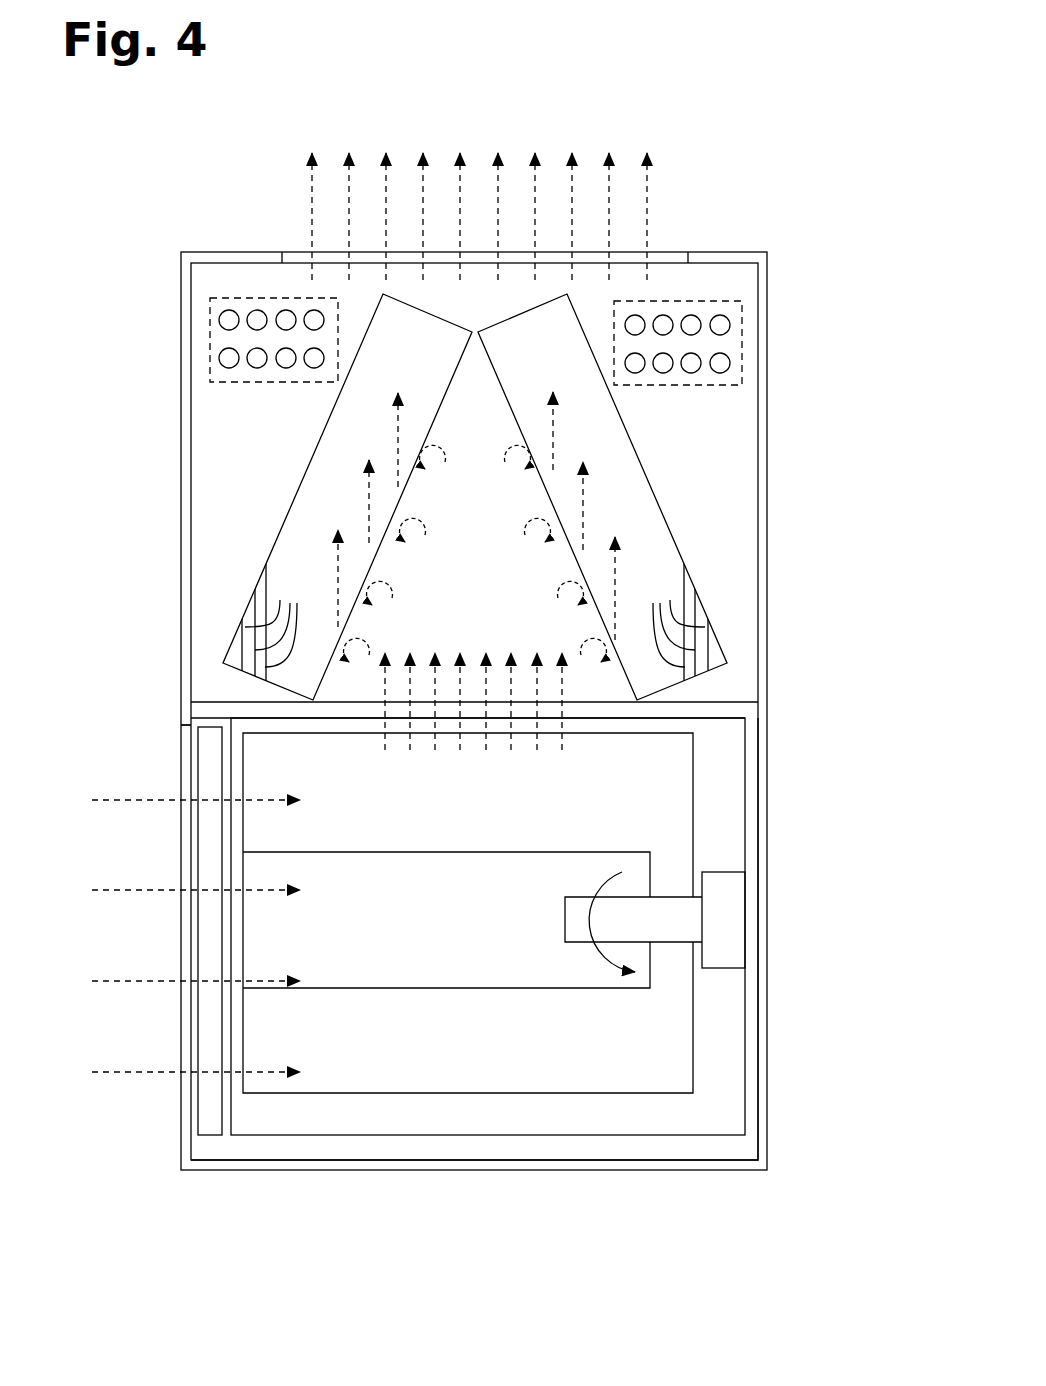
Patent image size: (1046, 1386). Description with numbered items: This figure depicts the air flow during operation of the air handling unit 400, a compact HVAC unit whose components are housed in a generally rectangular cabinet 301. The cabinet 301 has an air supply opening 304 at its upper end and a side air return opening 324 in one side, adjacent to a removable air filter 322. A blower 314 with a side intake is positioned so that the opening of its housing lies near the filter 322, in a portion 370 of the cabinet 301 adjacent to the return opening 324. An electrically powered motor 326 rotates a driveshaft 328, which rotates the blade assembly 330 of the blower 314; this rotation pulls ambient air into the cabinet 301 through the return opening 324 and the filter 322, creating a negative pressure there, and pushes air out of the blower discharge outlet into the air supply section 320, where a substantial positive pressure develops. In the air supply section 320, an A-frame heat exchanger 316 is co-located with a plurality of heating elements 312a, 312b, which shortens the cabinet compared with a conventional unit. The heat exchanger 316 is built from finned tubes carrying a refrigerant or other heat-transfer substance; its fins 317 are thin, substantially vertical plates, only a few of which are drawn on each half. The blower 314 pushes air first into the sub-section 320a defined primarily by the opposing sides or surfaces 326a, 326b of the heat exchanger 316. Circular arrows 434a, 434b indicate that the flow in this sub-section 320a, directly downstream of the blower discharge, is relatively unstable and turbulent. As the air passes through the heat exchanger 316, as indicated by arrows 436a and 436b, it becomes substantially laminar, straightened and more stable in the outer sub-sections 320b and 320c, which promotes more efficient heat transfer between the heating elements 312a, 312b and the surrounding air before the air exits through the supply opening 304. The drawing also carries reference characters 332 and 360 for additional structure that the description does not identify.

The air handling unit 400 is at (155, 198).
The cabinet 301 is at (767, 484).
The air supply opening 304 is at (683, 252).
The heating element 312a is at (210, 347).
The heating element 312b is at (742, 336).
The blower 314 is at (468, 913).
The heat exchanger 316 is at (313, 500).
The fins 317 is at (475, 622).
The air supply section 320 is at (233, 555).
The sub-section 320a is at (473, 635).
The sub-section 320b is at (289, 543).
The sub-section 320c is at (665, 551).
The removable air filter 322 is at (207, 1118).
The side air return opening 324 is at (182, 745).
The electrically-powered motor 326 is at (730, 882).
The opposing side of heat exchanger 326a is at (402, 555).
The opposing side of heat exchanger 326b is at (568, 547).
The driveshaft 328 is at (692, 923).
The blade assembly 330 is at (677, 823).
The outer chamber wall 332 is at (730, 770).
The partition 360 is at (758, 698).
The cabinet portion 370 is at (208, 1147).
The circular arrow 434a is at (447, 452).
The circular arrow 434b is at (532, 473).
The arrow 436a is at (400, 417).
The arrow 436b is at (553, 407).